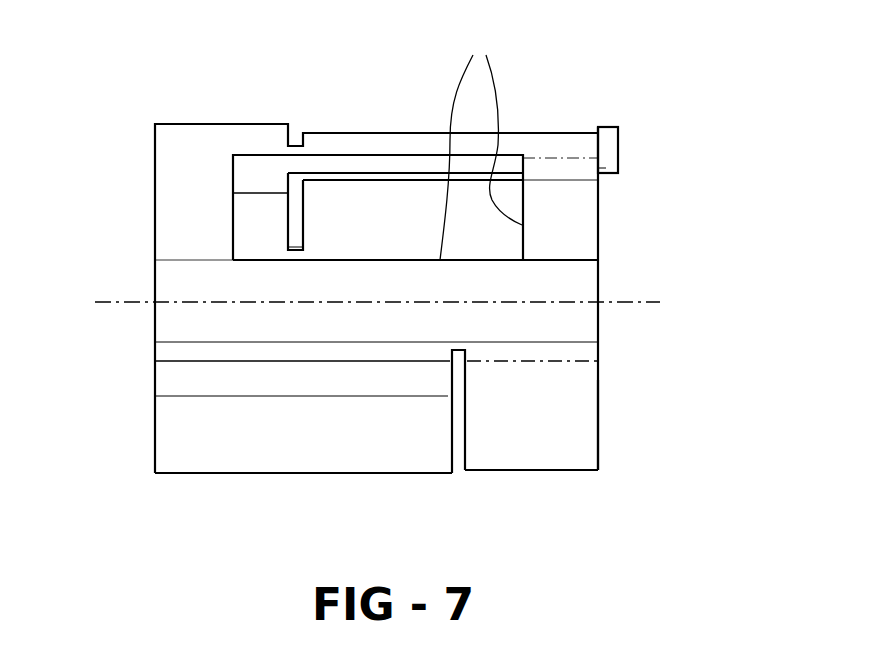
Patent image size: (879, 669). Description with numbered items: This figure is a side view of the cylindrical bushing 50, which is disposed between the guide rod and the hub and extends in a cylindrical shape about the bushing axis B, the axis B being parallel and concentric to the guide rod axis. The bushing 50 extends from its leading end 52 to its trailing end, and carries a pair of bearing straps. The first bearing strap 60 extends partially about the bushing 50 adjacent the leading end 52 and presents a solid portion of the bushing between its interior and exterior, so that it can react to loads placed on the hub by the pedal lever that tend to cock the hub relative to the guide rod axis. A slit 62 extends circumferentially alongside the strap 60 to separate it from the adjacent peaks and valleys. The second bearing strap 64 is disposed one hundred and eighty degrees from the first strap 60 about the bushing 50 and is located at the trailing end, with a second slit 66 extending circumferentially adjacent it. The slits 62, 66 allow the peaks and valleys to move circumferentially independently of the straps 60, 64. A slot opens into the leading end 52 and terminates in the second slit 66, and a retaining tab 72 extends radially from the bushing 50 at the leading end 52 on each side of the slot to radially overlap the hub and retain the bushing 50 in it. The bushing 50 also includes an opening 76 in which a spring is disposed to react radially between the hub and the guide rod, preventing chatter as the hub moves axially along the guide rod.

The cylindrical bushing 50 is at (607, 223).
The leading end 52 is at (600, 394).
The bearing strap 60 is at (545, 450).
The slit 62 is at (458, 460).
The second bearing strap 64 is at (258, 236).
The second slit 66 is at (297, 245).
The retaining tab 72 is at (610, 140).
The opening 76 is at (481, 145).
The bushing axis B is at (623, 302).